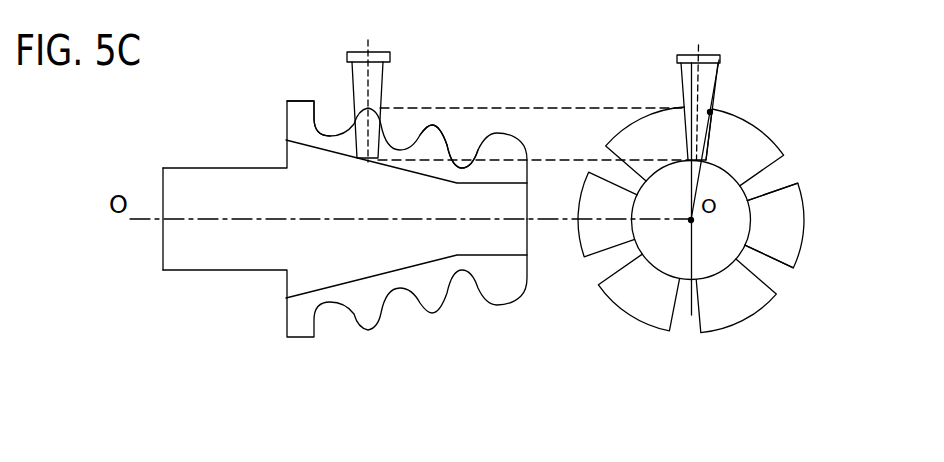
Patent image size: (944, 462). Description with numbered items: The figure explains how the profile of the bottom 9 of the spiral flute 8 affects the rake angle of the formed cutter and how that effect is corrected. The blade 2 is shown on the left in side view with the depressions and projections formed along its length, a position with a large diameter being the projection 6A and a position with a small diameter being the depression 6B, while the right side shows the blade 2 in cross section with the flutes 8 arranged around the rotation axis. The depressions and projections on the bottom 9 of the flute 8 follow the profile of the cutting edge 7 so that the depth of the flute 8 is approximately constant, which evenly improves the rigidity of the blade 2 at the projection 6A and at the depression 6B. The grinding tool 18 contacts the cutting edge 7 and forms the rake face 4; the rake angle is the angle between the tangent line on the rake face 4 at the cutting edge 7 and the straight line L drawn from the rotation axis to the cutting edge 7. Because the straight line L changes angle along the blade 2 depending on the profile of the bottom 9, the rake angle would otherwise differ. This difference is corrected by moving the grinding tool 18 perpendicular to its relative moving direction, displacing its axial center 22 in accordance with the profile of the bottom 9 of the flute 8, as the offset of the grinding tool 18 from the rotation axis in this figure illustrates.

The blade 2 is at (500, 315).
The rake face 4 is at (708, 148).
The projection 6A is at (433, 124).
The depression 6B is at (465, 165).
The cutting edge 7 is at (711, 112).
The spiral flute 8 is at (777, 176).
The bottom of the spiral flute 9 is at (302, 142).
The grinding tool 18 is at (384, 82).
The axial center 22 is at (700, 73).
The straight line L is at (717, 90).